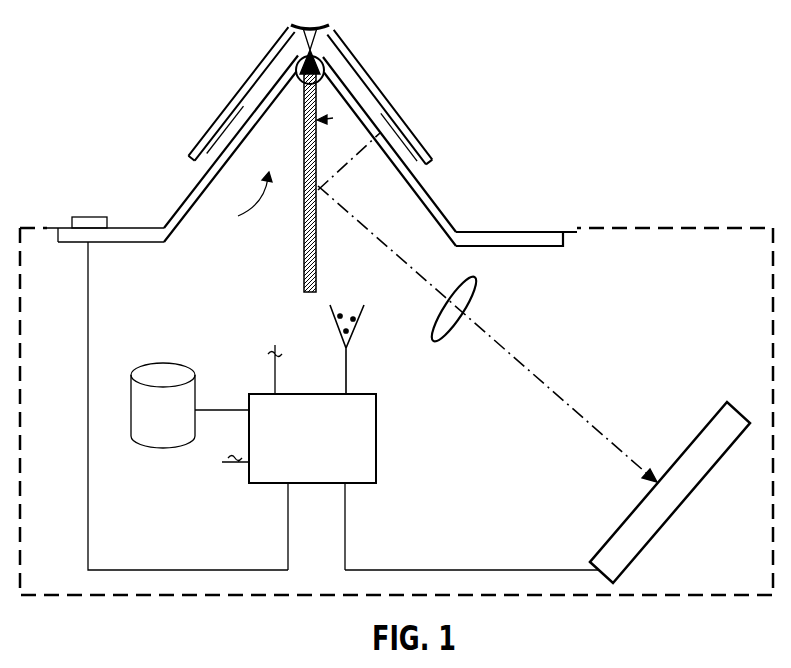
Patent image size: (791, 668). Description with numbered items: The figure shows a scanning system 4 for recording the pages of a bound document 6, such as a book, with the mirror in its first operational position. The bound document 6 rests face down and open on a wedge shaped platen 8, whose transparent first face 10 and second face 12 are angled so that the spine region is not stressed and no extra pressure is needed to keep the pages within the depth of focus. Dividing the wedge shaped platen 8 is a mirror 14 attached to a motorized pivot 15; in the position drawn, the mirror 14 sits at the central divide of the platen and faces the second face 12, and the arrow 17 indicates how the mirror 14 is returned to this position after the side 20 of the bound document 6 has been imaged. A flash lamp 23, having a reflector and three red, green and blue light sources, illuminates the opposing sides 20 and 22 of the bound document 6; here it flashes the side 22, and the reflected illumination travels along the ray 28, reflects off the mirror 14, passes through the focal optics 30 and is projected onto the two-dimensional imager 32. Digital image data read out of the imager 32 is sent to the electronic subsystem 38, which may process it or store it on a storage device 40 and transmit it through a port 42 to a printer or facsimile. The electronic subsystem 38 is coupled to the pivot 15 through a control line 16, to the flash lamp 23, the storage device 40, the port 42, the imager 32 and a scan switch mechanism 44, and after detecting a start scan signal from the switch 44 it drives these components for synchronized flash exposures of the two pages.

The scanning system 4 is at (661, 228).
The bound document 6 is at (424, 53).
The wedge shaped platen 8 is at (244, 200).
The first face 10 is at (195, 192).
The second face 12 is at (429, 194).
The mirror 14 is at (304, 232).
The pivot 15 is at (299, 62).
The control line 16 is at (275, 346).
The arrow 17 is at (333, 118).
The side of bound document 20 is at (230, 113).
The side of bound document 22 is at (390, 113).
The flash lamp or light source 23 is at (366, 328).
The ray 28 is at (565, 402).
The focal optics 30 is at (470, 302).
The two-dimensional sensor array or imager 32 is at (668, 520).
The electronic subsystem (ESS) 38 is at (377, 458).
The storage device 40 is at (170, 363).
The port 42 is at (227, 470).
The scan switch mechanism 44 is at (90, 217).